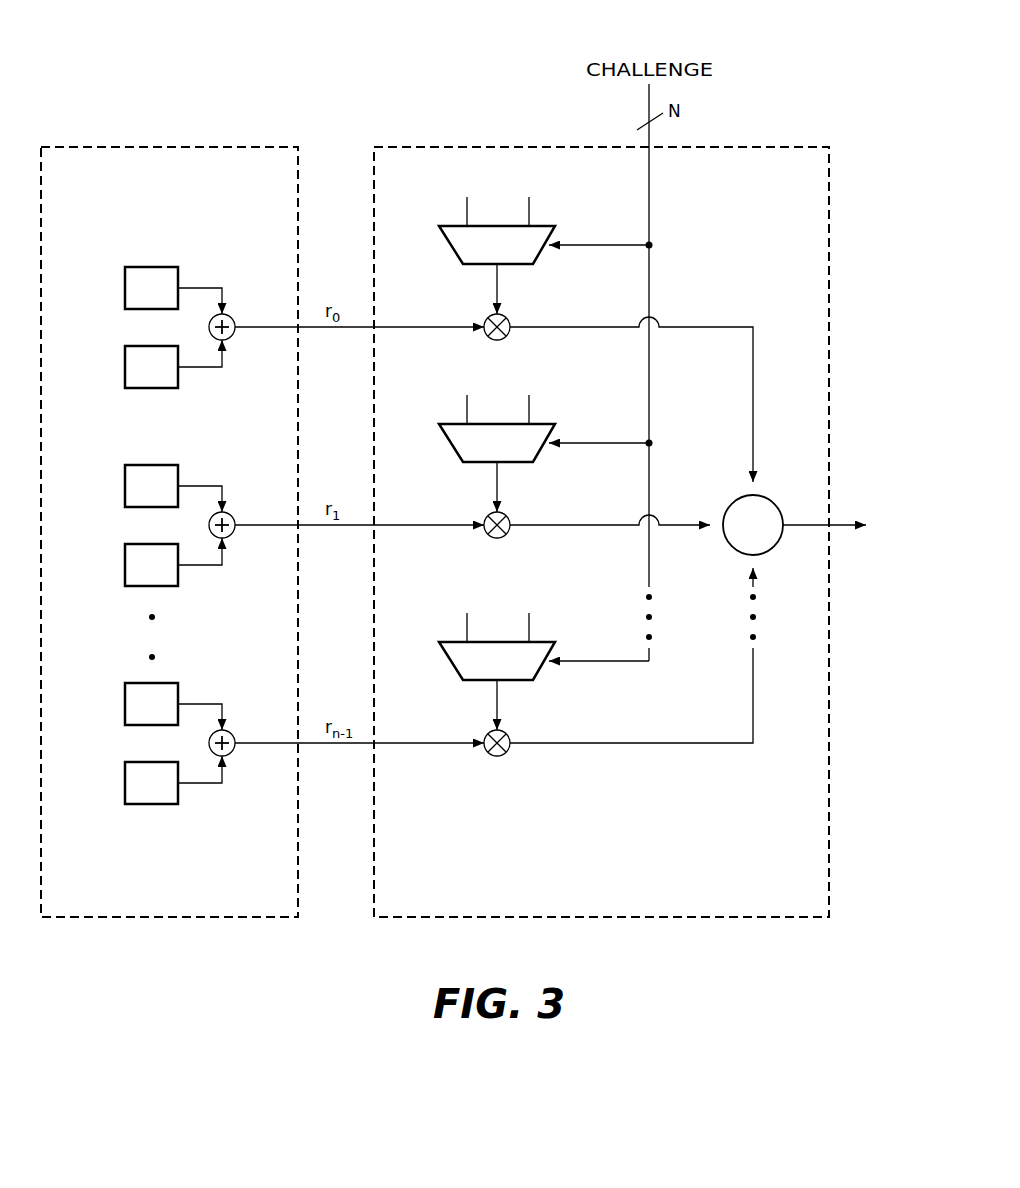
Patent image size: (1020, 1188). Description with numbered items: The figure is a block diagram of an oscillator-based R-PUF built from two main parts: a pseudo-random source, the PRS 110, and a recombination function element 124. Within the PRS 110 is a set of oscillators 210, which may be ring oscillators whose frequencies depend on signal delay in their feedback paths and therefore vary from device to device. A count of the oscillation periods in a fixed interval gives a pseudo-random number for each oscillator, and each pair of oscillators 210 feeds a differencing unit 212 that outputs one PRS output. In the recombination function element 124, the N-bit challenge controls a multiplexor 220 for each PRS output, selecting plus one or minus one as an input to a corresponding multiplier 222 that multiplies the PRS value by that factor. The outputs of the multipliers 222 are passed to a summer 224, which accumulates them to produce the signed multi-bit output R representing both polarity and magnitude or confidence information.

The PRS 110 is at (196, 146).
The recombination function element 124 is at (780, 146).
The oscillators 210 is at (125, 288).
The differencing unit 212 is at (234, 320).
The multiplexor 220 is at (514, 256).
The multipliers 222 is at (509, 322).
The summer 224 is at (780, 508).